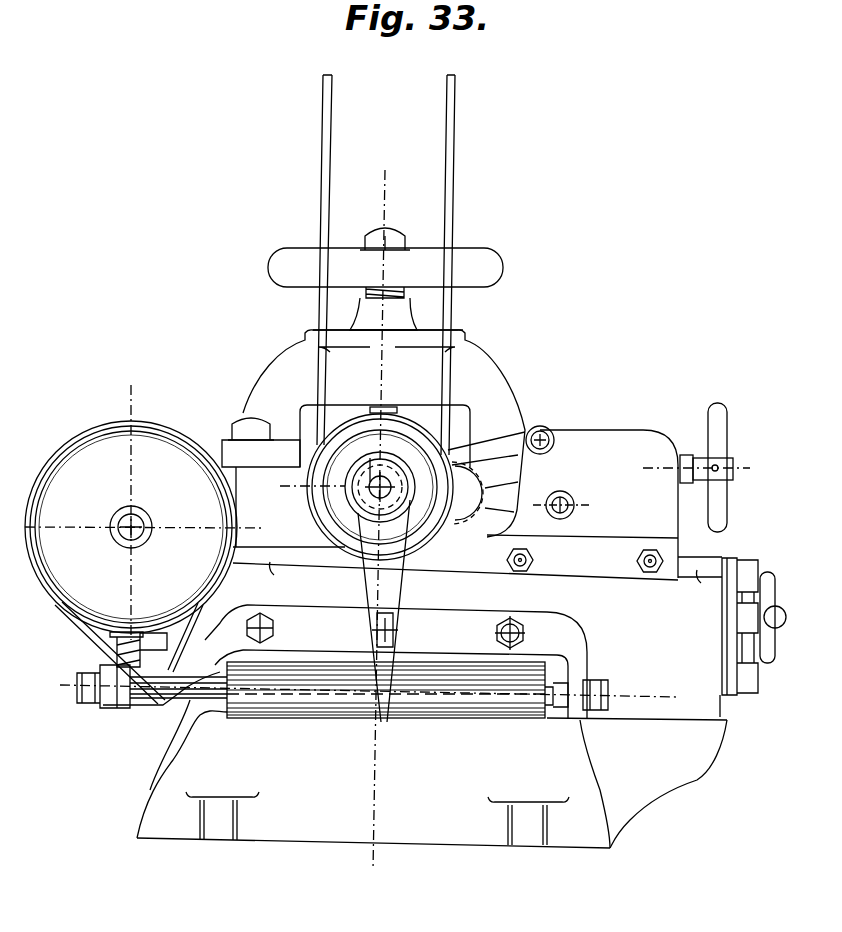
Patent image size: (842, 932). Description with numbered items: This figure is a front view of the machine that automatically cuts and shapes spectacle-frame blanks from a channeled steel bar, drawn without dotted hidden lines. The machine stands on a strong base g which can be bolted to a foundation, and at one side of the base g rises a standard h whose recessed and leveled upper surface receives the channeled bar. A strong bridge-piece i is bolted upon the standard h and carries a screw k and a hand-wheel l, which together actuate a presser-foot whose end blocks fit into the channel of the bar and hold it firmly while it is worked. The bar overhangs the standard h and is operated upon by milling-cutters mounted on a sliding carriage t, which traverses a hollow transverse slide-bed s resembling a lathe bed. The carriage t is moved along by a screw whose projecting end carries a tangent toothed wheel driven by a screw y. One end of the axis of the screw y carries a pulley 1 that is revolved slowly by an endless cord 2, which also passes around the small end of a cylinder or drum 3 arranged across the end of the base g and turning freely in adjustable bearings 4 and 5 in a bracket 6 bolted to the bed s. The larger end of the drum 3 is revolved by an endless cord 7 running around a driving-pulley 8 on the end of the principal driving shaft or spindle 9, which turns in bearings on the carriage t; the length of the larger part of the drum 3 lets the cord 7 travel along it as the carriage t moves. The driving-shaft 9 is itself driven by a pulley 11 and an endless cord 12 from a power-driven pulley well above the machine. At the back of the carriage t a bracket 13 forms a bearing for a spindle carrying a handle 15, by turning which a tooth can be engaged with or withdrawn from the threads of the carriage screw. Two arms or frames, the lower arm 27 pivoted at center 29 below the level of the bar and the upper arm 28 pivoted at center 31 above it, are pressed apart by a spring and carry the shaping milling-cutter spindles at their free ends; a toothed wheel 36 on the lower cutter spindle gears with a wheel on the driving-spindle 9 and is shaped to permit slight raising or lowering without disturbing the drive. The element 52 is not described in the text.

The pulley 1 is at (131, 527).
The endless cord 2 is at (106, 636).
The cylinder or drum 3 is at (455, 718).
The adjustable bearing 4 is at (118, 712).
The adjustable bearing 5 is at (551, 712).
The bracket 6 is at (594, 727).
The endless cord 7 is at (399, 585).
The driving-pulley 8 is at (352, 498).
The principal driving shaft or spindle 9 is at (367, 466).
The pulley 11 is at (322, 510).
The endless cord 12 is at (447, 193).
The bracket 13 is at (689, 538).
The handle 15 is at (698, 467).
The lower arm or frame 27 is at (501, 497).
The upper arm or frame 28 is at (486, 448).
The pivot center 29 is at (566, 498).
The pivot center 31 is at (542, 432).
The toothed wheel 36 is at (452, 520).
The clamp handle 52 is at (770, 580).
The screw y is at (144, 522).
The screw k is at (390, 232).
The hand-wheel l is at (385, 289).
The bridge-piece i is at (373, 438).
The carriage t is at (455, 505).
The slide-bed s is at (487, 582).
The base g is at (415, 760).
The standard h is at (190, 731).